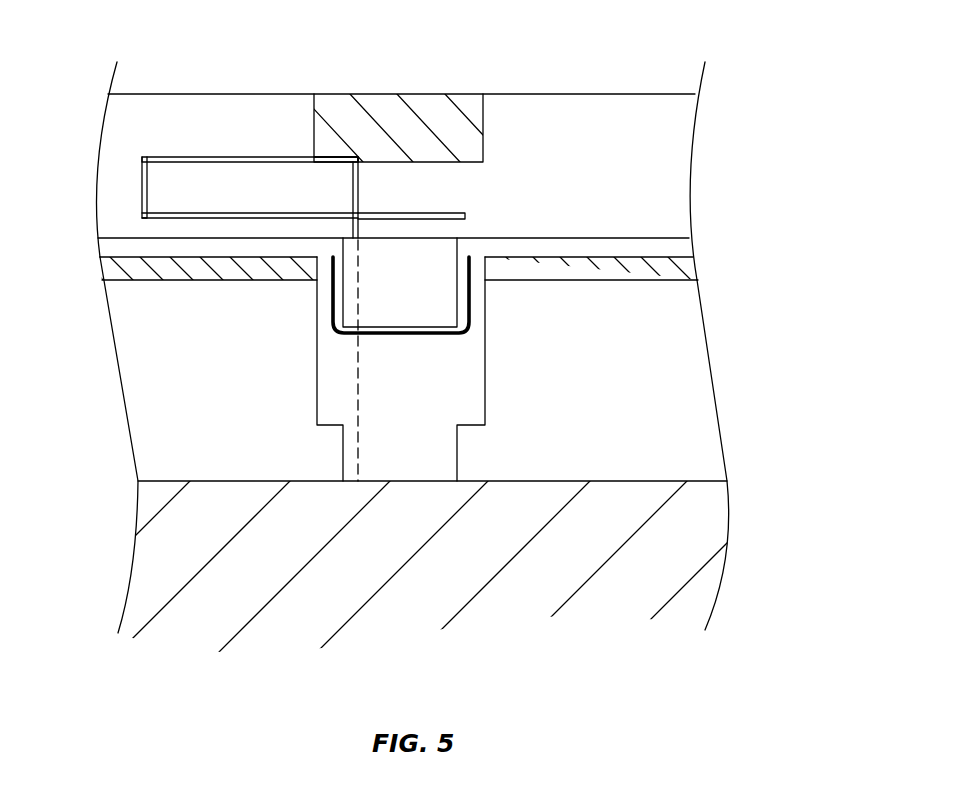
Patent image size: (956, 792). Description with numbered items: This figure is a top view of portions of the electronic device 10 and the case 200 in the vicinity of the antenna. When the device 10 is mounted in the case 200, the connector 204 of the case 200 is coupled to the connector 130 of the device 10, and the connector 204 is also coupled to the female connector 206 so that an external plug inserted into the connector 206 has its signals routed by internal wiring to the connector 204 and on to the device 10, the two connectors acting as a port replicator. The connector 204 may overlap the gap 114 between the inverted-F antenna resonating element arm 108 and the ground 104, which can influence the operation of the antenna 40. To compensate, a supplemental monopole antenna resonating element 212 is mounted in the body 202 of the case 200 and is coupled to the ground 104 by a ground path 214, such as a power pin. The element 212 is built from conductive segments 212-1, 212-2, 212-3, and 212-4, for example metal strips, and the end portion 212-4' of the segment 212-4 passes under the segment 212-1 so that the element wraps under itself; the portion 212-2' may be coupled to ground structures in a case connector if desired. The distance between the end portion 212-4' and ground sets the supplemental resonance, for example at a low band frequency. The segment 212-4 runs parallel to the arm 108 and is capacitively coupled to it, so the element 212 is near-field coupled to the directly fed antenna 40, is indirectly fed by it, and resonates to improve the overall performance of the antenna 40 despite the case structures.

The electronic device 10 is at (75, 628).
The antenna 40 is at (766, 377).
The ground 104 is at (625, 492).
The inverted-F antenna resonating element arm 108 is at (690, 268).
The gap 114 is at (697, 325).
The connector 130 is at (478, 327).
The case 200 is at (75, 95).
The body 202 is at (650, 94).
The connector 204 is at (460, 265).
The female connector 206 is at (483, 108).
The monopole antenna resonating element 212 is at (319, 143).
The segment 212-1 is at (360, 182).
The segment 212-2 is at (250, 109).
The portion of element 212 212-2' is at (353, 106).
The segment 212-3 is at (148, 182).
The segment 212-4 is at (250, 195).
The end portion of segment 212-4 212-4' is at (427, 194).
The ground path 214 is at (357, 375).